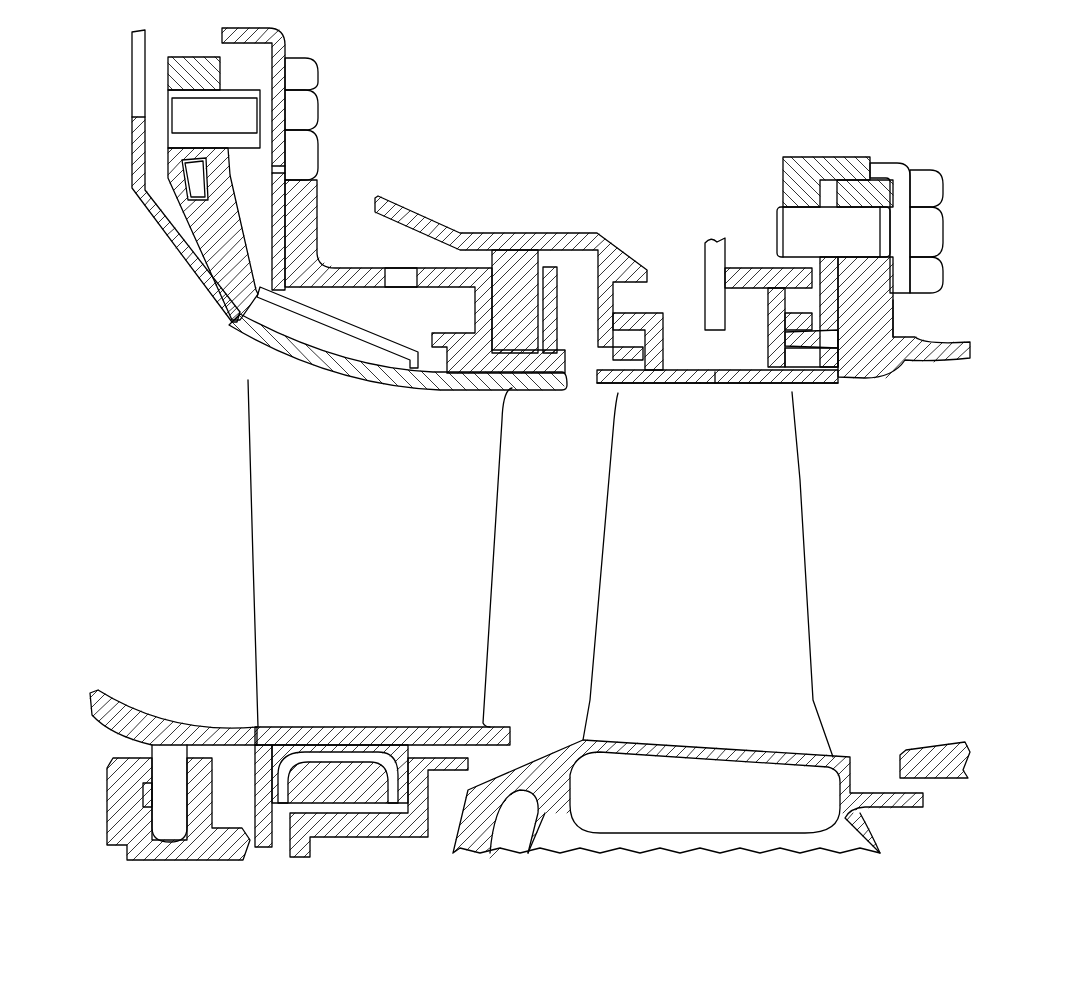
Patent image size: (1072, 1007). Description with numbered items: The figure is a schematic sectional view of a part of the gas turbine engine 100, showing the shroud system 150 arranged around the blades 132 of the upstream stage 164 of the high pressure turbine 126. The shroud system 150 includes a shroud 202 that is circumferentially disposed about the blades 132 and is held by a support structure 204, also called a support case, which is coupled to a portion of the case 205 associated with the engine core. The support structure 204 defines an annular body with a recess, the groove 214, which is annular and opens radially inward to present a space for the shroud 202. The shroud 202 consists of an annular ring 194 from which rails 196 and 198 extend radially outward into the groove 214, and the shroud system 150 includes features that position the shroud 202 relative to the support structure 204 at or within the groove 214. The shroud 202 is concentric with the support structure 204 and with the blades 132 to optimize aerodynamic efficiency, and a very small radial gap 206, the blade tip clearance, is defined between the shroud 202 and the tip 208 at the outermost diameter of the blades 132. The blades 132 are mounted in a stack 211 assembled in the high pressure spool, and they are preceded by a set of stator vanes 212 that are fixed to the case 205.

The gas turbine engine 100 is at (858, 62).
The high pressure turbine 126 is at (836, 606).
The blades 132 is at (775, 498).
The shroud system 150 is at (722, 205).
The upstream stage 164 is at (580, 98).
The annular ring 194 is at (715, 373).
The rail 196 is at (623, 327).
The rail 198 is at (797, 307).
The shroud 202 is at (688, 358).
The support structure 204 is at (578, 230).
The case 205 is at (128, 150).
The radial gap 206 is at (612, 389).
The tip 208 is at (785, 385).
The stack 211 is at (750, 752).
The stator vanes 212 is at (275, 550).
The groove 214 is at (692, 317).